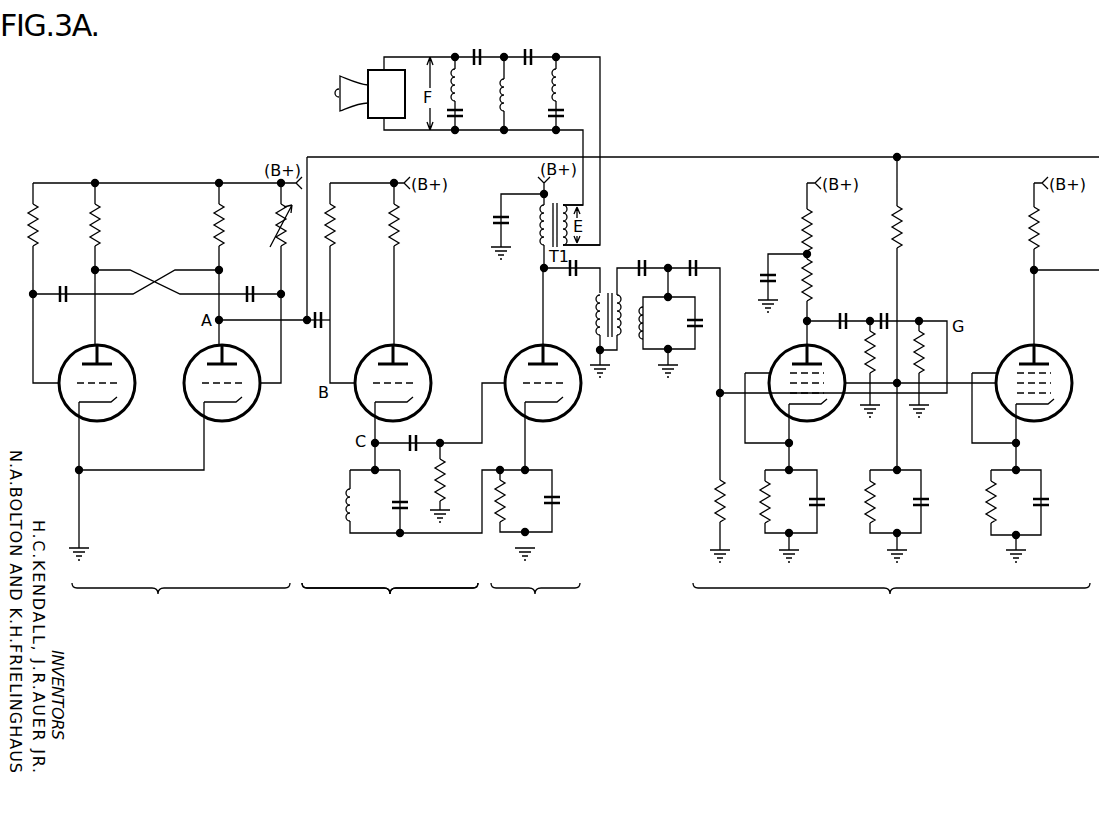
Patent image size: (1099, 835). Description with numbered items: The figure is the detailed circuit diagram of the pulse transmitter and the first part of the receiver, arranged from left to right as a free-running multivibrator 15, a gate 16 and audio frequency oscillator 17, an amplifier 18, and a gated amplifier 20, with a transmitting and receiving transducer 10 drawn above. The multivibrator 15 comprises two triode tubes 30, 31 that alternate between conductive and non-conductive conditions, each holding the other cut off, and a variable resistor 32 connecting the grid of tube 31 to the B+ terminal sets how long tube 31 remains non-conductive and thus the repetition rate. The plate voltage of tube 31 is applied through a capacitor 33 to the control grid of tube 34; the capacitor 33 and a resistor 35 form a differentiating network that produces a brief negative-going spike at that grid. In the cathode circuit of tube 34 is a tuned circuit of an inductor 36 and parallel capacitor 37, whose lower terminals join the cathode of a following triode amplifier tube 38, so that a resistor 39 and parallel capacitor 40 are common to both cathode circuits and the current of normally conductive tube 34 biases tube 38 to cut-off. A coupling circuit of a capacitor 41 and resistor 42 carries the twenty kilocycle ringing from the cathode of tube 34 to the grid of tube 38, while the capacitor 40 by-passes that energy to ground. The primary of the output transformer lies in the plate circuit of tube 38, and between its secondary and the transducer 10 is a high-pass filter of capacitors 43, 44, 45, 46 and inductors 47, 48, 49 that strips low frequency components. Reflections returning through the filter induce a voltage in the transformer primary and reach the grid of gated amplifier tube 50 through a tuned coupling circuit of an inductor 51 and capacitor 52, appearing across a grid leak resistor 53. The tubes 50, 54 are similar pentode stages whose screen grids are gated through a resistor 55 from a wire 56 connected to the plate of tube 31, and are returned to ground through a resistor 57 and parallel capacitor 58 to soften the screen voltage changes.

The transmitting and receiving transducer 10 is at (365, 108).
The free-running multivibrator 15 is at (181, 612).
The gate 16 is at (390, 612).
The audio frequency oscillator 17 is at (390, 623).
The amplifier 18 is at (535, 602).
The gated amplifier 20 is at (891, 602).
The triode tube 30 is at (63, 395).
The triode tube 31 is at (188, 405).
The variable resistor 32 is at (283, 215).
The capacitor 33 is at (322, 329).
The tube 34 is at (417, 358).
The resistor 35 is at (344, 251).
The inductor 36 is at (350, 505).
The capacitor 37 is at (398, 508).
The triode amplifier tube 38 is at (517, 360).
The resistor 39 is at (513, 501).
The capacitor 40 is at (557, 498).
The capacitor 41 is at (413, 452).
The resistor 42 is at (453, 480).
The capacitor 43 is at (533, 46).
The capacitor 44 is at (478, 46).
The capacitor 45 is at (461, 113).
The capacitor 46 is at (568, 113).
The inductor 47 is at (461, 79).
The inductor 48 is at (507, 92).
The inductor 49 is at (569, 83).
The gated amplifier tube 50 is at (786, 358).
The inductor 51 is at (648, 312).
The capacitor 52 is at (693, 330).
The grid leak resistor 53 is at (718, 500).
The pentode tube 54 is at (1006, 360).
The resistor 55 is at (900, 225).
The wire 56 is at (1013, 153).
The resistor 57 is at (870, 500).
The capacitor 58 is at (927, 502).